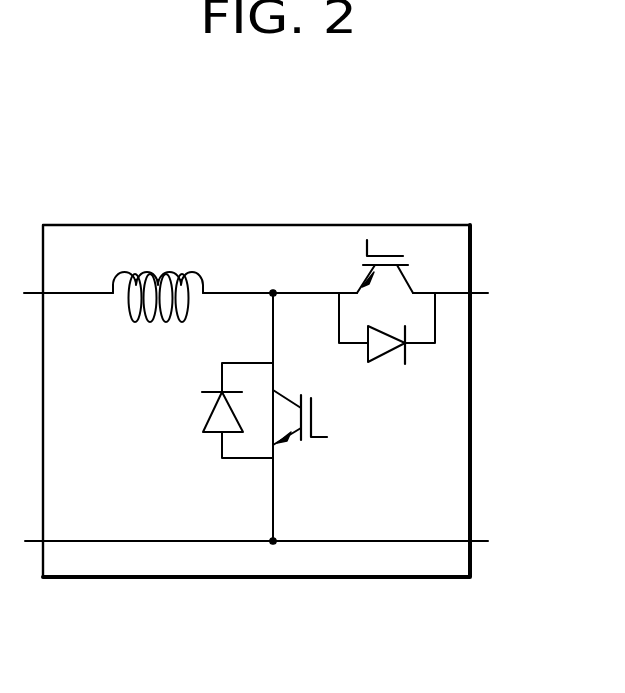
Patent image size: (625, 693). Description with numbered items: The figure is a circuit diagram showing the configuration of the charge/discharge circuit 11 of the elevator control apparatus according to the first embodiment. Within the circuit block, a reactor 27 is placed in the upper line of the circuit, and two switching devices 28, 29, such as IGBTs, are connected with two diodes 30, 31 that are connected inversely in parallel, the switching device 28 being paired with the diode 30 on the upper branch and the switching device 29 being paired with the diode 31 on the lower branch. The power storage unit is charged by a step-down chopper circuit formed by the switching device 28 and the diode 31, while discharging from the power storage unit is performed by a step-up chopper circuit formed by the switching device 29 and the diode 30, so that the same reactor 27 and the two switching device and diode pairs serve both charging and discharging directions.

The charge/discharge circuit 11 is at (265, 225).
The reactor 27 is at (153, 273).
The switching device 28 is at (387, 252).
The switching device 29 is at (328, 420).
The diode 30 is at (415, 353).
The diode 31 is at (208, 415).